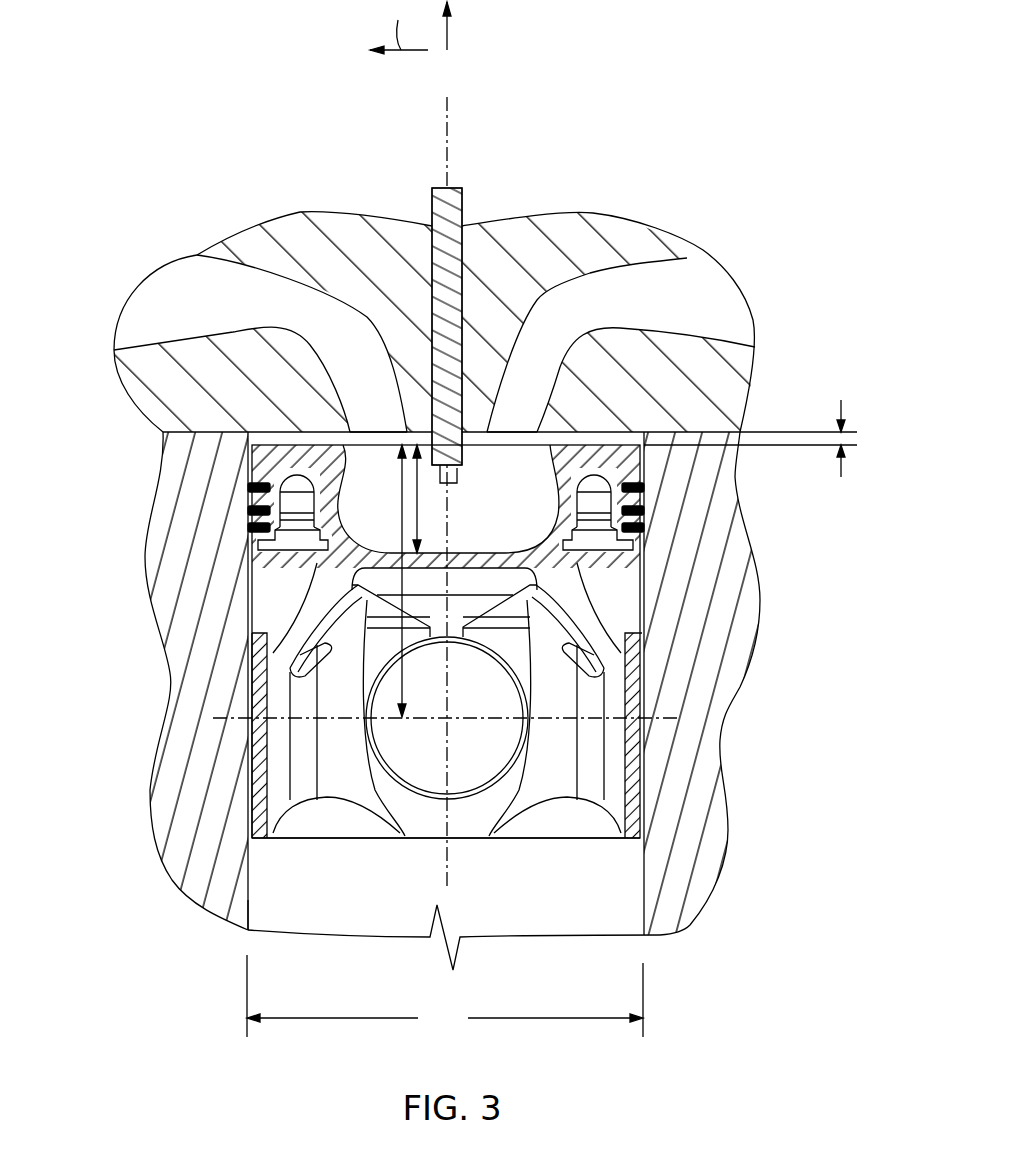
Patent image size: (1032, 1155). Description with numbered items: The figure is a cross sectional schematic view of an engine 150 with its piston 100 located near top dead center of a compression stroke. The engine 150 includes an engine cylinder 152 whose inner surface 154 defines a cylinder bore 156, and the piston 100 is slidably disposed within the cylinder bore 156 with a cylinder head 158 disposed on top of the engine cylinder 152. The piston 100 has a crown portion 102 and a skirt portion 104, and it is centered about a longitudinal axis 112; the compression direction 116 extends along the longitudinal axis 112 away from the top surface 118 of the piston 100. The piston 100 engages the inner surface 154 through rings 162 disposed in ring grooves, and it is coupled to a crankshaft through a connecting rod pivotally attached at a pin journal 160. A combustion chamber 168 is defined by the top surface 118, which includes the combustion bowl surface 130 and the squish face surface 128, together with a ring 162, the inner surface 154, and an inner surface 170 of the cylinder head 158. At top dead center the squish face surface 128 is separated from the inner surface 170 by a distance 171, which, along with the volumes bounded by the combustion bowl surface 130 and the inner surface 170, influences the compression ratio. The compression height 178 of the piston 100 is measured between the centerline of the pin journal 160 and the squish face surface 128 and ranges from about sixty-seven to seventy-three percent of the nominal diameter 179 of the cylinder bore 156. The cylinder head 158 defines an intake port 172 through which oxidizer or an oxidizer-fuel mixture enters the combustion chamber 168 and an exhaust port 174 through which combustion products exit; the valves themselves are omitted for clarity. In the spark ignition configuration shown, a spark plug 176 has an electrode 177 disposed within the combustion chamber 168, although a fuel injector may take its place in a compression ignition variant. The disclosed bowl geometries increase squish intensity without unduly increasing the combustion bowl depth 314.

The piston 100 is at (468, 666).
The crown portion 102 is at (645, 472).
The skirt portion 104 is at (250, 757).
The longitudinal axis 112 is at (447, 115).
The compression direction 116 is at (447, 28).
The top surface 118 is at (247, 413).
The squish face surface 128 is at (293, 443).
The combustion bowl surface 130 is at (373, 540).
The engine 150 is at (698, 62).
The engine cylinder 152 is at (733, 653).
The inner surface 154 is at (260, 613).
The cylinder bore 156 is at (537, 895).
The cylinder head 158 is at (478, 297).
The pin journal 160 is at (402, 836).
The rings 162 is at (645, 487).
The combustion chamber 168 is at (489, 479).
The inner surface of the cylinder head 170 is at (570, 442).
The distance 171 is at (838, 420).
The intake port 172 is at (219, 311).
The exhaust port 174 is at (691, 311).
The spark plug 176 is at (515, 346).
The electrode 177 is at (453, 487).
The compression height 178 is at (445, 683).
The nominal diameter 179 is at (445, 996).
The combustion bowl depth 314 is at (418, 510).